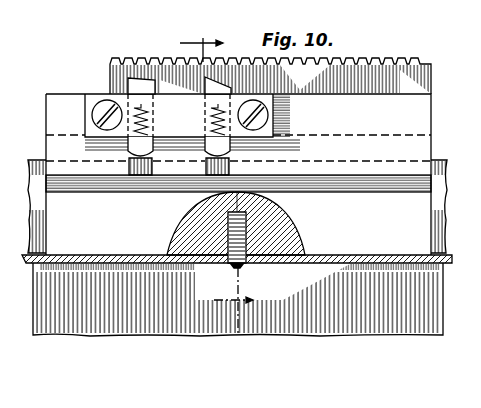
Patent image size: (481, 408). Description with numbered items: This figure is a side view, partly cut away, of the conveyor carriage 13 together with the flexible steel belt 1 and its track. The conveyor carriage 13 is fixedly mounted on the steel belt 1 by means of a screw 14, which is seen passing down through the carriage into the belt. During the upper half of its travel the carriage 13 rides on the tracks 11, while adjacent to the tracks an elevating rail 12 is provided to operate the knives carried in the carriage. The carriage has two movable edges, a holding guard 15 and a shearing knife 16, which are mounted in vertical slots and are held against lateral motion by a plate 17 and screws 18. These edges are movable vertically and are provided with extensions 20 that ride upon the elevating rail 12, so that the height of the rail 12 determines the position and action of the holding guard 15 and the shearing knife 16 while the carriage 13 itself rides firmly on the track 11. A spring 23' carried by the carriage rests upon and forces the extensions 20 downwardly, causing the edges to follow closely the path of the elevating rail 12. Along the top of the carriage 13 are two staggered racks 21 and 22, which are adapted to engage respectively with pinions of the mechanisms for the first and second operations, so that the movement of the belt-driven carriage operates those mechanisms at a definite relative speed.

The steel belt 1 is at (31, 259).
The tracks 11 is at (215, 174).
The elevating rail 12 is at (38, 191).
The conveyor carriage 13 is at (400, 174).
The screw 14 is at (247, 272).
The holding guard 15 is at (137, 87).
The shearing knife 16 is at (223, 85).
The plate 17 is at (268, 127).
The screws 18 is at (96, 115).
The extensions 20 is at (215, 149).
The rack 21 is at (117, 72).
The rack 22 is at (397, 72).
The spring 23' is at (13, 76).